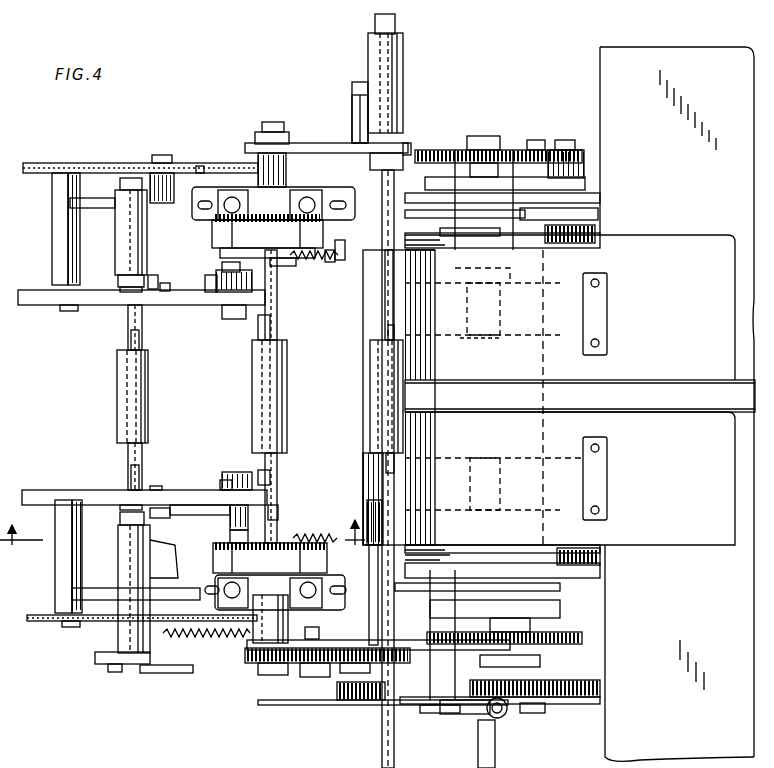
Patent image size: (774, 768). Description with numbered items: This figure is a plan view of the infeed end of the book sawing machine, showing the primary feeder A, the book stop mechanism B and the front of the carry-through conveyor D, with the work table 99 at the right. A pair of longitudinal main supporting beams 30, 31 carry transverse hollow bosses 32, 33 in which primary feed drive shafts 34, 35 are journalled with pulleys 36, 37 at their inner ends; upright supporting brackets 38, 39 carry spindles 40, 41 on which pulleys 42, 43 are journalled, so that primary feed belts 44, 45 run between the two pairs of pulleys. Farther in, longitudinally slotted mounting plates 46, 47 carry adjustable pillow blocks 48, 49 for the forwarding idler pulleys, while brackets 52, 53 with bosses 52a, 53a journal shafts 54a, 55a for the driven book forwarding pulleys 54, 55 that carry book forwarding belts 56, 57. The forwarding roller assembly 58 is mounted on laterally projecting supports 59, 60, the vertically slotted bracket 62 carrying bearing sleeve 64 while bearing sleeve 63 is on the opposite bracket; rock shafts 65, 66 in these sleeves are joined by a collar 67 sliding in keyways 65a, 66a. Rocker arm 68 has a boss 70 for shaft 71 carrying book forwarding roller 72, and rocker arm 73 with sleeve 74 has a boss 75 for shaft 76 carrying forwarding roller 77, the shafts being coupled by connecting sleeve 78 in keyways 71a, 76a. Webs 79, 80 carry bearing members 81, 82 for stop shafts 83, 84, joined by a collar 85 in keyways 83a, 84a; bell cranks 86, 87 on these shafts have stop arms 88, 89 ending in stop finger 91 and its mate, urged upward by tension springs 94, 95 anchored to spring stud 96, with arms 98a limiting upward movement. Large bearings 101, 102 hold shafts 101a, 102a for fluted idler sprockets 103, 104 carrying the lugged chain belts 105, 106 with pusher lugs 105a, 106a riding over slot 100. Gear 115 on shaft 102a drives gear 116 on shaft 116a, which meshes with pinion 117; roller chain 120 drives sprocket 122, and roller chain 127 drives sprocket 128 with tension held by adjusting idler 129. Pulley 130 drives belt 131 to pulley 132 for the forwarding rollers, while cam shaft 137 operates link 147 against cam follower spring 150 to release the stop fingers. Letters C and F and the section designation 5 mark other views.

The sprocket 128 is at (42, 165).
The book stop mechanism B is at (127, 158).
The adjusting idler 129 is at (168, 162).
The roller chain 127 is at (200, 166).
The boss 75 is at (258, 140).
The transverse hollow boss 33 is at (52, 258).
The longitudinal main supporting beam 31 is at (70, 203).
The bearing member 82 is at (118, 229).
The web 80 is at (118, 279).
The arm 98a is at (120, 505).
The bell crank 87 is at (175, 280).
The stop arm 89 is at (212, 238).
The pillow block 49 is at (240, 200).
The longitudinally slotted mounting plate 47 is at (320, 198).
The upright supporting bracket 39 is at (222, 267).
The spindle 41 is at (216, 278).
The pulley 43 is at (208, 300).
The primary feed belt 45 is at (165, 300).
The pulley 37 is at (36, 305).
The primary feed drive shaft 35 is at (68, 311).
The stop shaft 84 is at (128, 318).
The keyway 84a is at (131, 345).
The collar 85 is at (117, 376).
The stop shaft 83 is at (128, 460).
The keyway 83a is at (131, 475).
The pulley 36 is at (36, 492).
The primary feed belt 44 is at (156, 486).
The primary feeder A is at (180, 488).
The spindle 40 is at (240, 472).
The pulley 42 is at (225, 480).
The web 79 is at (120, 518).
The stop arm 88 is at (160, 518).
The upright supporting bracket 38 is at (230, 515).
The bearing member 81 is at (118, 571).
The bell crank 86 is at (152, 545).
The book forwarding roller 72 is at (213, 562).
The transverse hollow boss 32 is at (55, 572).
The longitudinal main supporting beam 30 is at (72, 594).
The sprocket 122 is at (40, 621).
The primary feed drive shaft 34 is at (70, 627).
The roller chain 120 is at (100, 655).
The link 147 is at (182, 673).
The cam follower spring 150 is at (207, 638).
The pillow block 48 is at (308, 608).
The laterally projecting support 59 is at (325, 628).
The boss 70 is at (255, 630).
The rocker arm 68 is at (250, 650).
The forwarding roller assembly 58 is at (287, 668).
The longitudinally slotted mounting plate 46 is at (380, 566).
The section line 5 is at (182, 543).
The tension spring 94 is at (310, 535).
The spring stud 96 is at (280, 510).
The forwarding roller 77 is at (294, 262).
The tension spring 95 is at (328, 262).
The stop finger 91 is at (342, 260).
The shaft 76 is at (277, 322).
The keyway 76a is at (278, 335).
The connecting sleeve 78 is at (287, 374).
The shaft 71 is at (277, 470).
The keyway 71a is at (276, 465).
The bearing sleeve 64 is at (403, 62).
The vertically slotted bracket 62 is at (358, 84).
The laterally projecting support 60 is at (352, 110).
The sleeve 74 is at (407, 148).
The rocker arm 73 is at (328, 143).
The bearing sleeve 63 is at (382, 752).
The rock shaft 66 is at (385, 310).
The keyway 66a is at (388, 333).
The collar 67 is at (370, 394).
The rock shaft 65 is at (380, 486).
The keyway 65a is at (386, 462).
The station C is at (300, 133).
The book forwarding belt 57 is at (425, 236).
The gear 115 is at (435, 150).
The pinion 117 is at (490, 136).
The shaft 55a is at (535, 140).
The shaft 116a is at (578, 143).
The gear 116 is at (585, 160).
The bracket 53 is at (590, 182).
The boss 53a is at (598, 213).
The driven book forwarding pulley 55 is at (575, 243).
The work table 99 is at (700, 52).
The frame F is at (635, 47).
The carry-through conveyor D is at (665, 243).
The fluted lugged chain belt 106 is at (570, 307).
The fluted lugged chain belt 105 is at (570, 486).
The slot 100 is at (545, 394).
The large bearing 102 is at (512, 276).
The shaft 102a is at (480, 338).
The fluted idler sprocket 104 is at (555, 338).
The book pusher lug 106a is at (607, 348).
The shaft 101a is at (480, 458).
The large bearing 101 is at (525, 512).
The fluted idler sprocket 103 is at (560, 450).
The book pusher lug 105a is at (607, 450).
The driven book forwarding pulley 54 is at (600, 547).
The book forwarding belt 56 is at (412, 566).
The boss 52a is at (600, 574).
The bracket 52 is at (585, 637).
The shaft 54a is at (560, 665).
The pulley 130 is at (600, 690).
The belt 131 is at (510, 716).
The cam shaft 137 is at (495, 746).
The pulley 132 is at (425, 713).